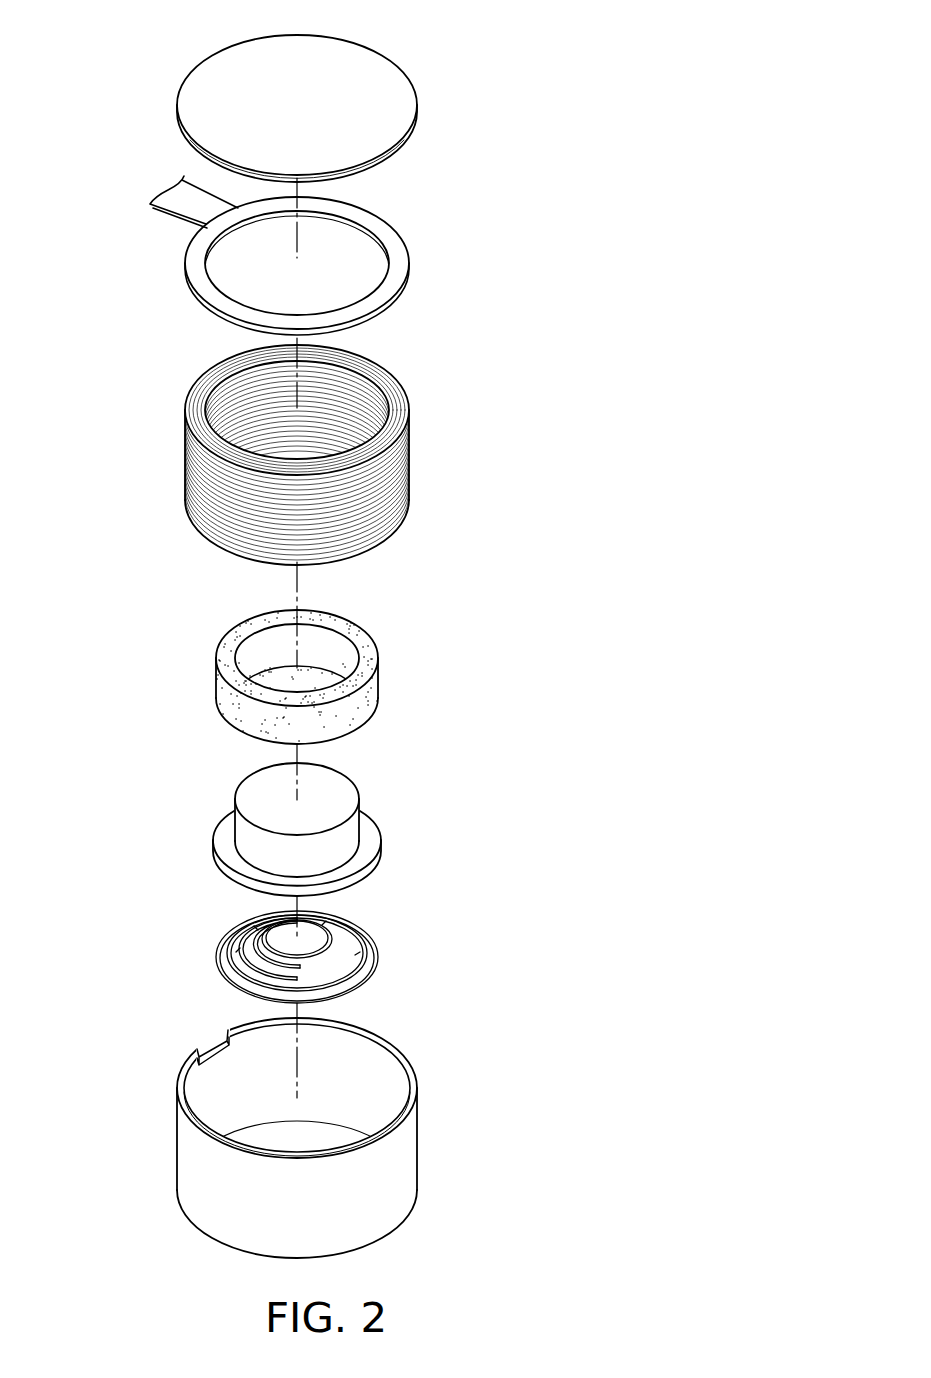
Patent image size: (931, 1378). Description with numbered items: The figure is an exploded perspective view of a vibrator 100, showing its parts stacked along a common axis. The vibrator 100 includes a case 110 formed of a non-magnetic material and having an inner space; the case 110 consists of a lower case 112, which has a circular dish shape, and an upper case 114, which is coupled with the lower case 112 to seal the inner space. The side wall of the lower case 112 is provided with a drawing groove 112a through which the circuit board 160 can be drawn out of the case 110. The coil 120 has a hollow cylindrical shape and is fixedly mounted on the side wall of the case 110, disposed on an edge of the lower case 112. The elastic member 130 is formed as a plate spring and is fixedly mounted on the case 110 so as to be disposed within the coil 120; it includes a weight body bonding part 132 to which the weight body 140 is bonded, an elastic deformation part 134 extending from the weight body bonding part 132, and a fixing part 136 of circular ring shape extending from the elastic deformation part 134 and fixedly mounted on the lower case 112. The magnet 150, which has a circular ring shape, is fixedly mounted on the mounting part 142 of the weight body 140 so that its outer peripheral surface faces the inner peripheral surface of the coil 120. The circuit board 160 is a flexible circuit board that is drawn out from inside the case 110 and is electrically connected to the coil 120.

The vibrator 100 is at (114, 30).
The case 110 is at (337, 646).
The lower case 112 is at (336, 1103).
The drawing groove 112a is at (222, 1040).
The upper case 114 is at (398, 97).
The coil 120 is at (403, 468).
The elastic member 130 is at (403, 959).
The weight body bonding part 132 is at (308, 932).
The elastic deformation part 134 is at (347, 952).
The fixing part 136 is at (363, 972).
The weight body 140 is at (338, 792).
The mounting part 142 is at (368, 838).
The magnet 150 is at (373, 685).
The circuit board 160 is at (398, 257).